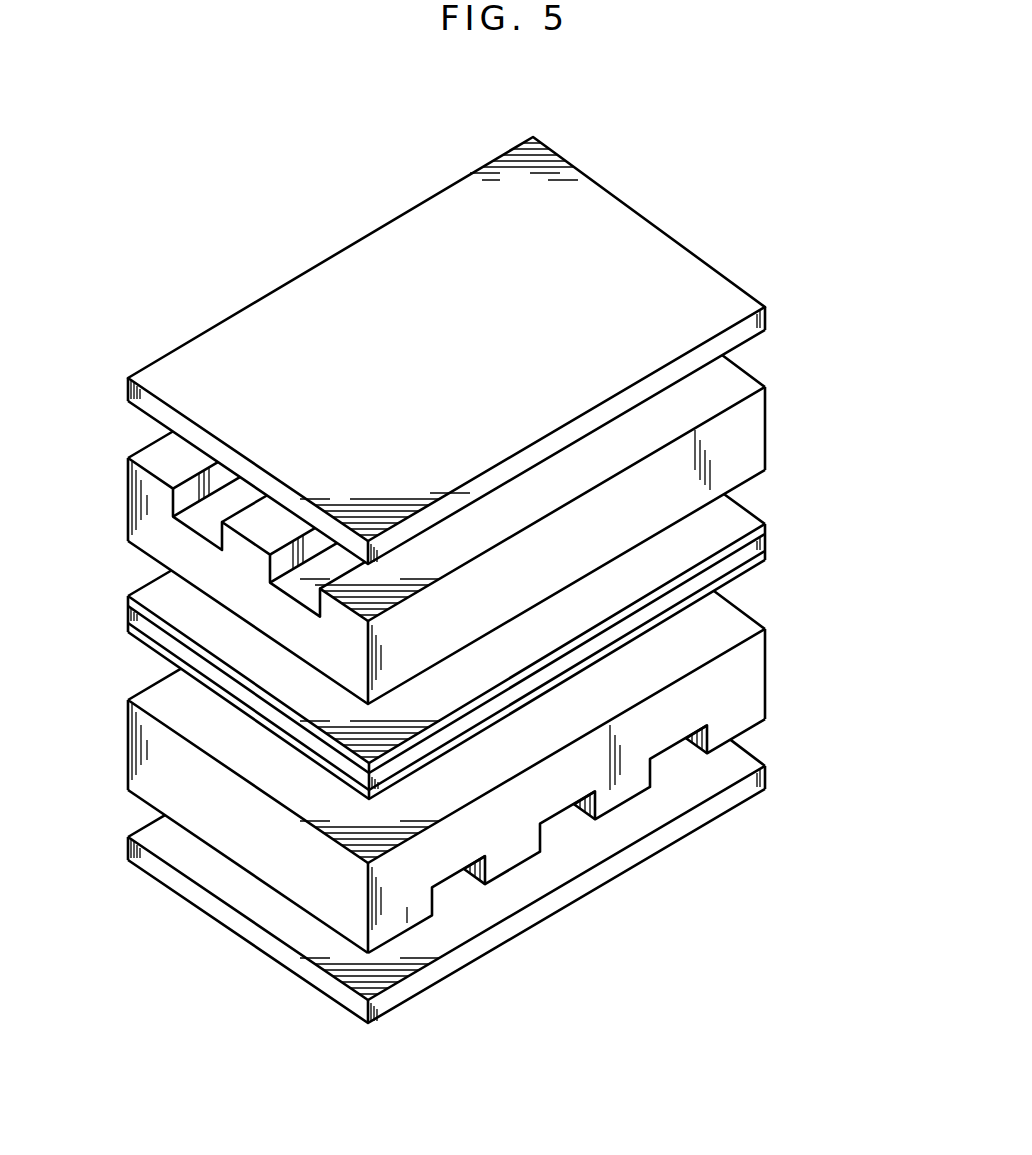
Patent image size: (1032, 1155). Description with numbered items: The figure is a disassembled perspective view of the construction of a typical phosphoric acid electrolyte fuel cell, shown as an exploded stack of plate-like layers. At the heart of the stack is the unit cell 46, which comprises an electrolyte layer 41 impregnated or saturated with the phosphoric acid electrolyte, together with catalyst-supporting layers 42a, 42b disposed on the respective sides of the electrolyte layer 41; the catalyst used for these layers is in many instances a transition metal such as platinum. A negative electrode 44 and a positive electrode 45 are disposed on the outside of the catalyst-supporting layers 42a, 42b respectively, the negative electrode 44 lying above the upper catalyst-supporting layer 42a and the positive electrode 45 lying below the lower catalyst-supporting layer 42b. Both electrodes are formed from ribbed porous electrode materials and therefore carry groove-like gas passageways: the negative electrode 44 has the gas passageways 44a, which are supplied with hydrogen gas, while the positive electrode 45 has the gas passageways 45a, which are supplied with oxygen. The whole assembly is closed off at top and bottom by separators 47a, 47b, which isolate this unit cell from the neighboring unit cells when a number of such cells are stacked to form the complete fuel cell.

The separator 47a is at (728, 300).
The negative electrode 44 is at (442, 529).
The gas passageways 44a is at (205, 510).
The catalyst-supporting layer 42a is at (727, 524).
The electrolyte layer 41 is at (752, 548).
The catalyst-supporting layer 42b is at (494, 675).
The unit cell 46 is at (522, 577).
The positive electrode 45 is at (486, 775).
The gas passageways 45a is at (563, 820).
The separator 47b is at (715, 767).